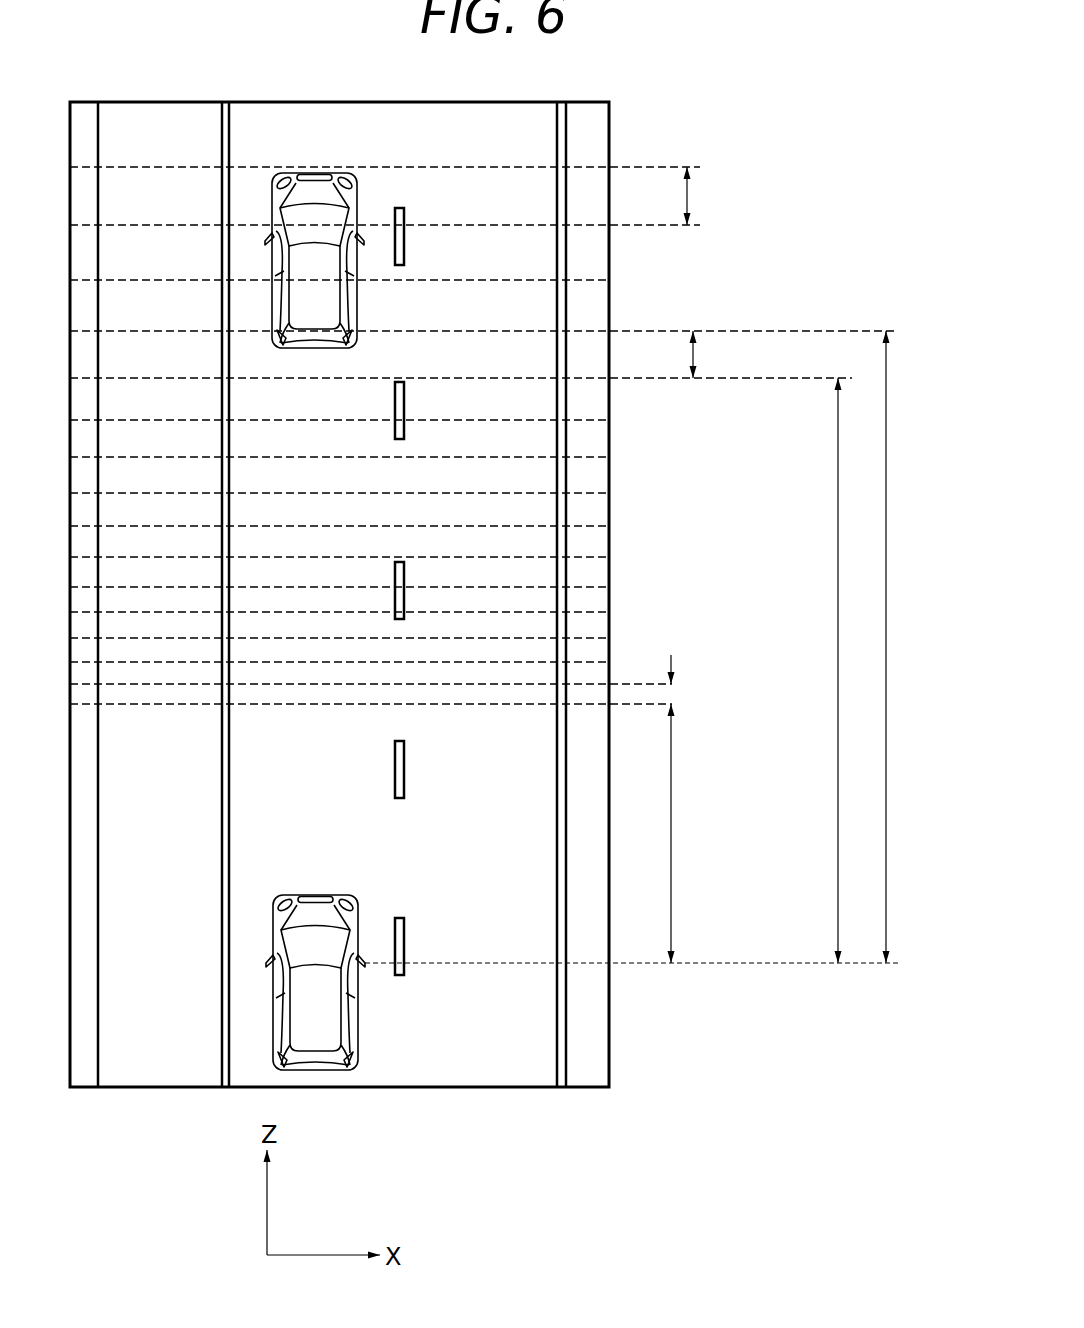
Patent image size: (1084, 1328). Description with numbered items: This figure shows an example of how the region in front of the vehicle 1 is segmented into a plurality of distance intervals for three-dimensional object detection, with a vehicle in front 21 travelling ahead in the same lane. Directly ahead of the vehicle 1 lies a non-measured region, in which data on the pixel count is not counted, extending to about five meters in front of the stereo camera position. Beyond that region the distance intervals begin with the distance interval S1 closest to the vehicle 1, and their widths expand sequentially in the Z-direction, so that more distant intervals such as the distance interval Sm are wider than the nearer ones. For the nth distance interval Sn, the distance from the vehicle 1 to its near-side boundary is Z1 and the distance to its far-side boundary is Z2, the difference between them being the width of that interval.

The vehicle in front 21 is at (352, 179).
The vehicle 1 is at (357, 907).
The distance interval Sm is at (809, 196).
The nth distance interval Sn is at (761, 356).
The distance interval closest to the vehicle S1 is at (743, 809).
The distance from the vehicle to the near-side boundary Z1 is at (852, 670).
The distance from the vehicle to the far-side boundary Z2 is at (899, 647).